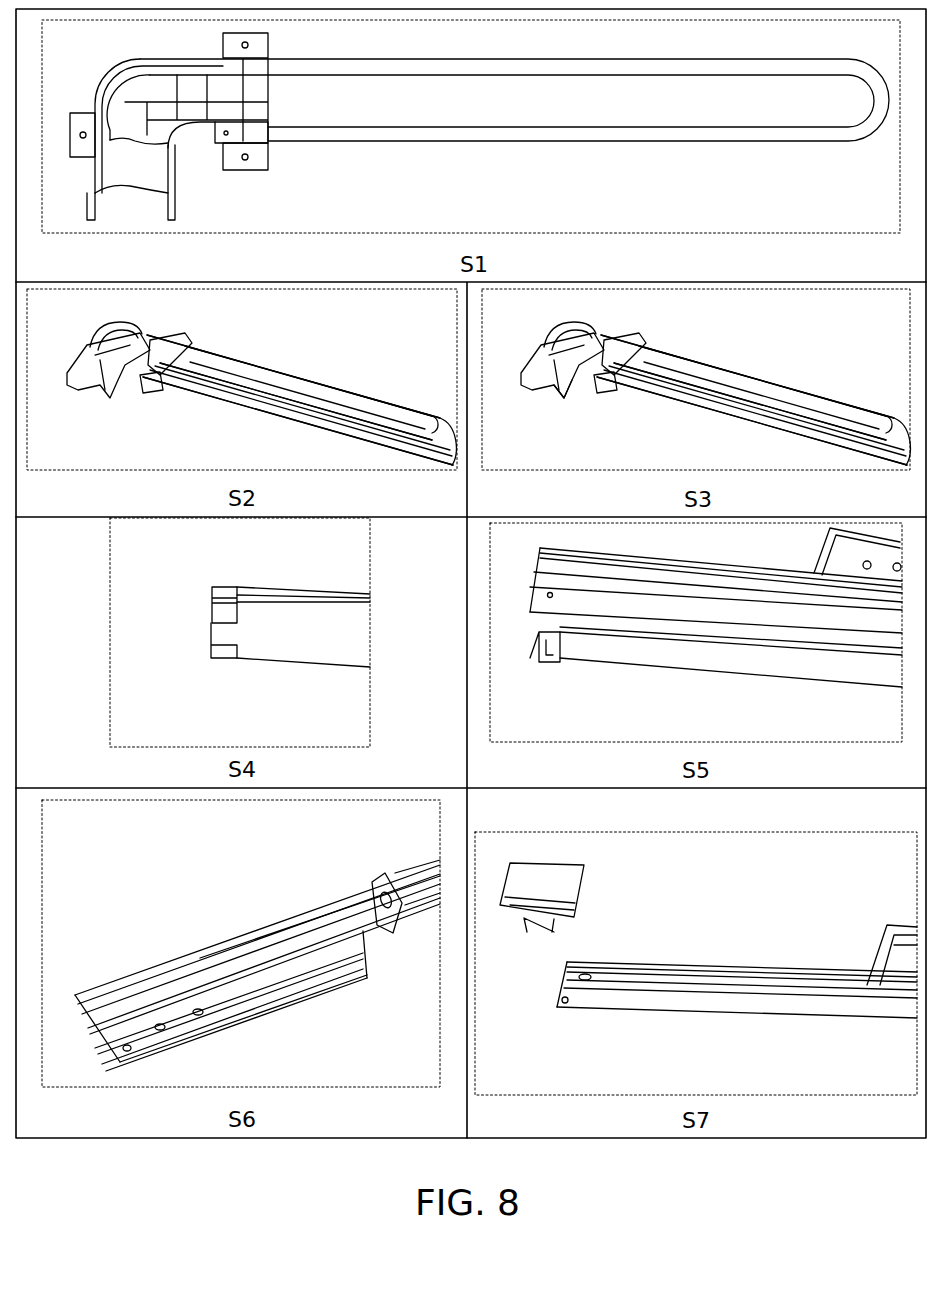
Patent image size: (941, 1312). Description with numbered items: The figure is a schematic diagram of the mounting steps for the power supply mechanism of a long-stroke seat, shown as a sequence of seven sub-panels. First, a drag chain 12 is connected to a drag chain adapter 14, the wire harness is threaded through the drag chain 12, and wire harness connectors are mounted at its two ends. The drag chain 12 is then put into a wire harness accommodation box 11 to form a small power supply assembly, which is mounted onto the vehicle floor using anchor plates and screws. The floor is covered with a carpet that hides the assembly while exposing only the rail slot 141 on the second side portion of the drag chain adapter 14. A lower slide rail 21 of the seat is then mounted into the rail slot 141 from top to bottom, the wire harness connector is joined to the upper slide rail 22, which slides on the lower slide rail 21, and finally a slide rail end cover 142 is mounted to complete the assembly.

The wire harness accommodation box 11 is at (272, 370).
The drag chain 12 is at (528, 136).
The drag chain adapter 14 is at (105, 75).
The rail slot 141 is at (170, 168).
The slide rail end cover 142 is at (562, 877).
The lower slide rail 21 is at (740, 572).
The upper slide rail 22 is at (408, 875).